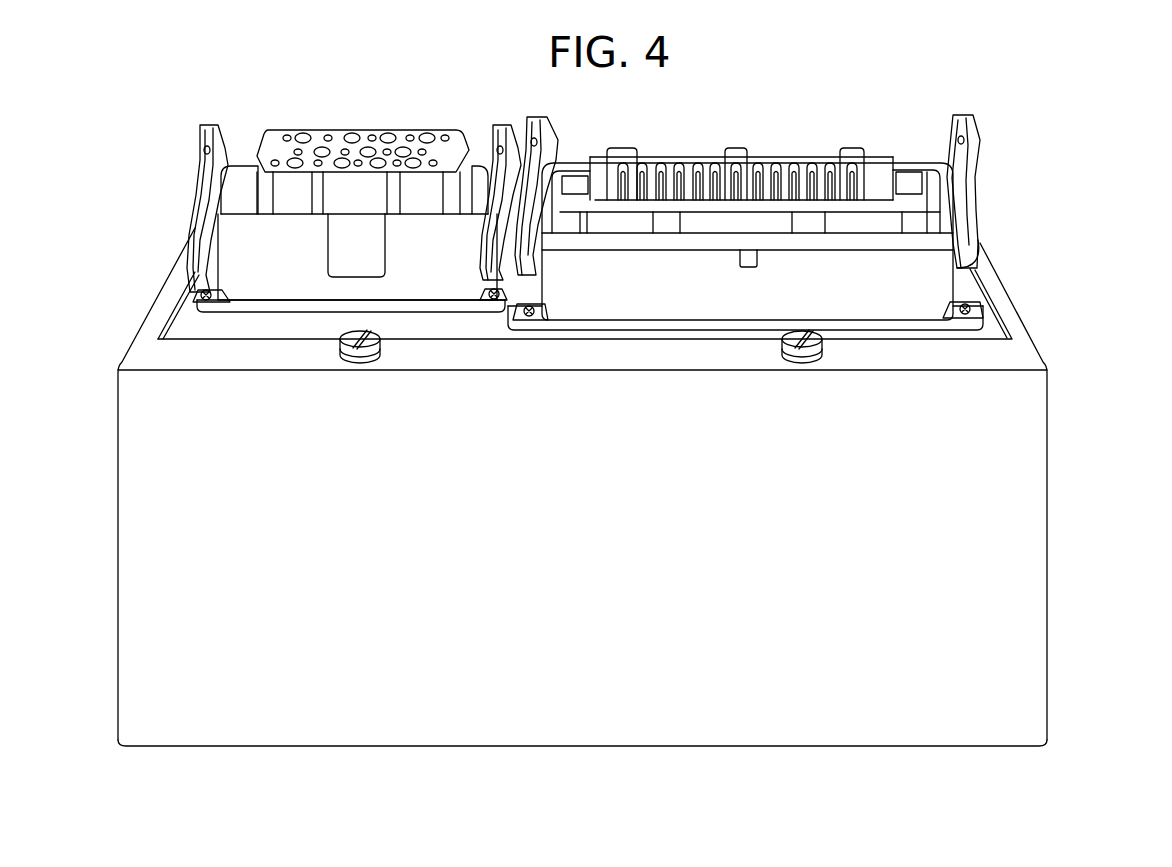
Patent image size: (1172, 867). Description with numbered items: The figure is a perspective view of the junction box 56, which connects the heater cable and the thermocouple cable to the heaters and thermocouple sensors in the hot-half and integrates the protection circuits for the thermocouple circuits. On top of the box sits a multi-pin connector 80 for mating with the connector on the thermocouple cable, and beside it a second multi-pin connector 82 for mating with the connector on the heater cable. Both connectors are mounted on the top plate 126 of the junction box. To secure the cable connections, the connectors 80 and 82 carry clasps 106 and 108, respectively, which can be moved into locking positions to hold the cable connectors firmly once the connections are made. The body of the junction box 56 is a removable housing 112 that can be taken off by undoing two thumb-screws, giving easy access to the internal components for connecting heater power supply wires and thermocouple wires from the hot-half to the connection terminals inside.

The junction box 56 is at (1030, 288).
The multi-pin connector 80 is at (410, 133).
The second multi-pin connector 82 is at (800, 167).
The clasp 106 is at (200, 147).
The clasp 108 is at (923, 167).
The removable housing 112 is at (1025, 410).
The top plate 126 is at (188, 328).